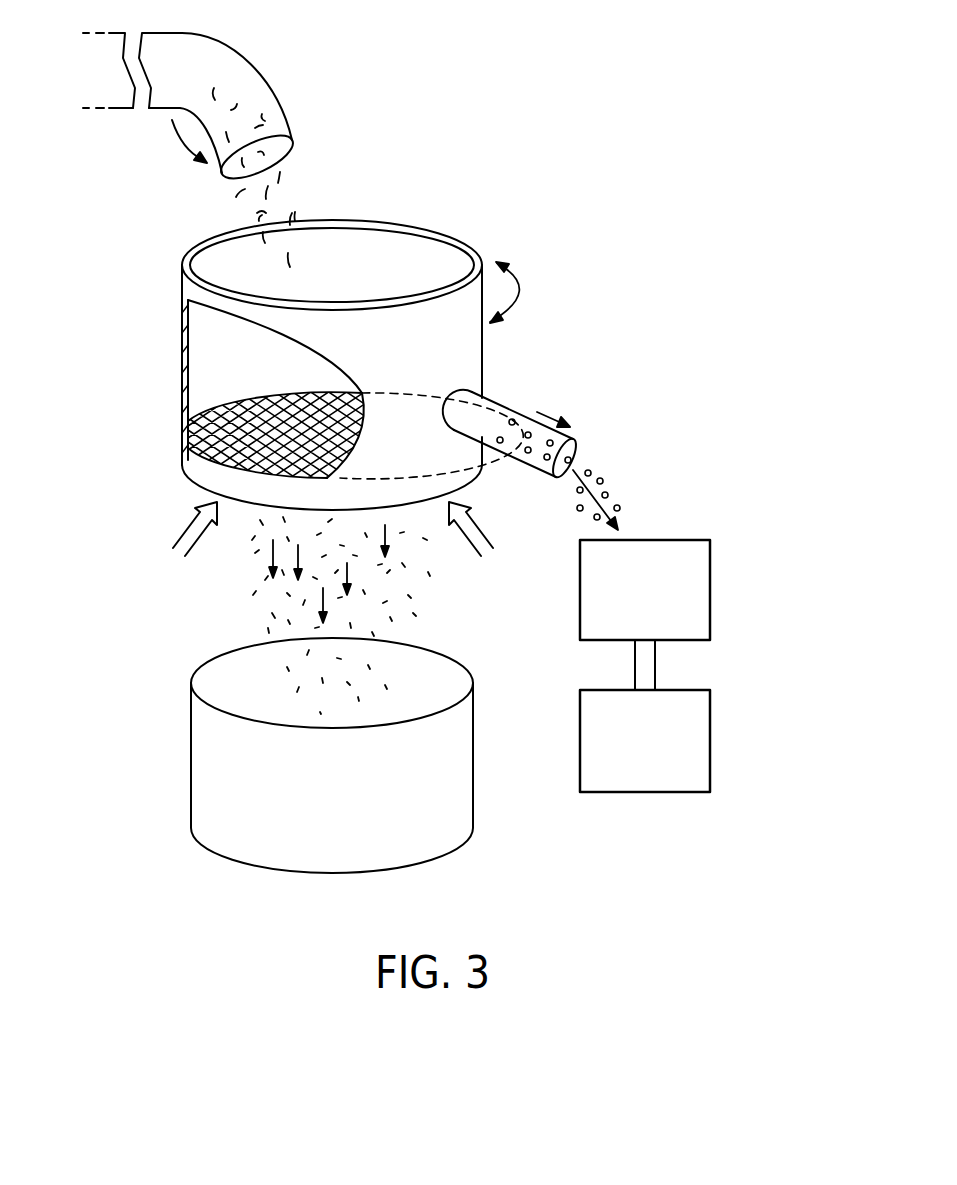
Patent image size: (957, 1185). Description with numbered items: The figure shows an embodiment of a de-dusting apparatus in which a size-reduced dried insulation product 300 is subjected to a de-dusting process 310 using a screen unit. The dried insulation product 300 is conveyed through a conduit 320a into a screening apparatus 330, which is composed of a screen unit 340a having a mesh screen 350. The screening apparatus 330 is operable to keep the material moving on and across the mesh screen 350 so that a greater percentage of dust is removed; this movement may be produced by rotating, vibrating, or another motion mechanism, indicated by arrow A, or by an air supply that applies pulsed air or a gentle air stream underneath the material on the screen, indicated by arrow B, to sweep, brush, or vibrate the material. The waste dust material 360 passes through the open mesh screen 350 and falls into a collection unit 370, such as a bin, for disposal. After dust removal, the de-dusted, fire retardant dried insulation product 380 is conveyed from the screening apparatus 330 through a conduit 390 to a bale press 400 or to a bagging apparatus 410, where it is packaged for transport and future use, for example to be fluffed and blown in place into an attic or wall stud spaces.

The dried insulation product 300 is at (288, 192).
The de-dusting process 310 is at (466, 90).
The conduit 320a is at (228, 43).
The screening apparatus 330 is at (482, 241).
The screen unit 340a is at (181, 342).
The mesh screen 350 is at (205, 415).
The waste dust material 360 is at (283, 667).
The collection unit 370 is at (351, 810).
The de-dusted fire retardant dried insulation product 380 is at (612, 496).
The conduit 390 is at (522, 412).
The bale press 400 is at (580, 585).
The bagging apparatus 410 is at (580, 740).
The motion mechanism arrow A is at (530, 289).
The air stream arrow B is at (190, 526).